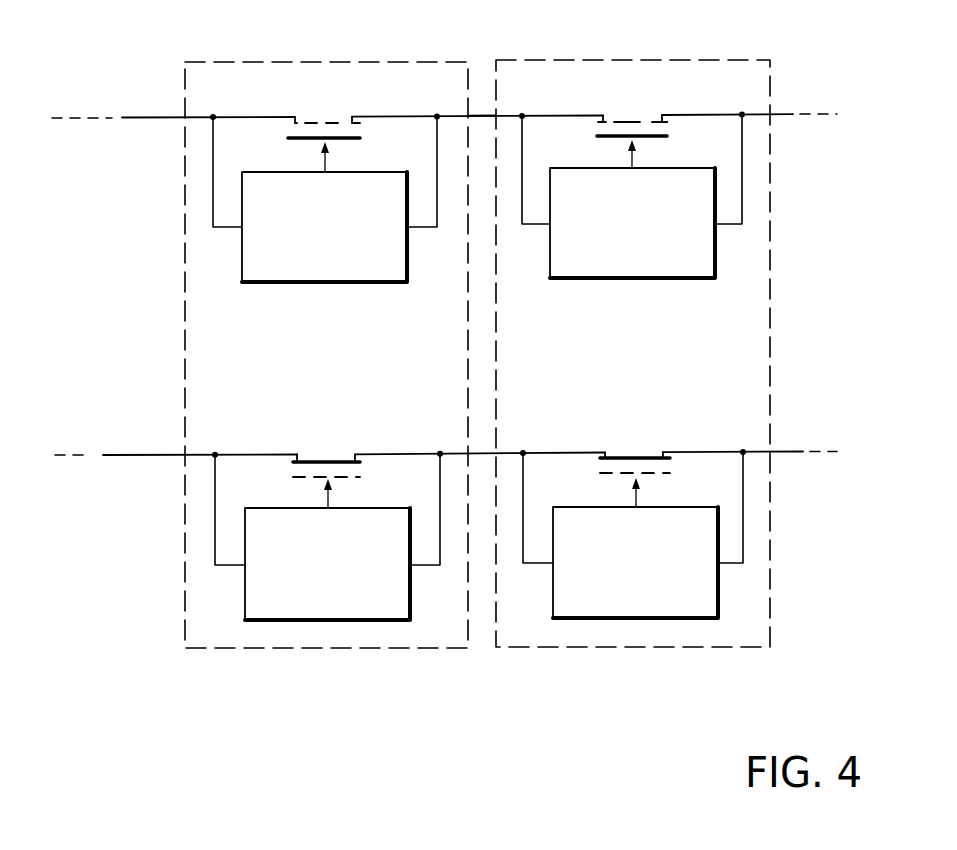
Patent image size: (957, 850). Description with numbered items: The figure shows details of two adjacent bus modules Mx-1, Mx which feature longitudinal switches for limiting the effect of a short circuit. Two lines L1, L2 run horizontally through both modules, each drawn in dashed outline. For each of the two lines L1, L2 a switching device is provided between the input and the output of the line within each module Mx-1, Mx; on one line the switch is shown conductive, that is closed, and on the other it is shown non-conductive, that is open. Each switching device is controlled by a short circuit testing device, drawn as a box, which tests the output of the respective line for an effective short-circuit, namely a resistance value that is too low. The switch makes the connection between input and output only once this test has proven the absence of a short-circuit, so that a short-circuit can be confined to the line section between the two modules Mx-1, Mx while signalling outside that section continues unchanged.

The first line L1 is at (127, 113).
The second line L2 is at (110, 464).
The module Mx-1 is at (248, 652).
The module Mx is at (553, 652).